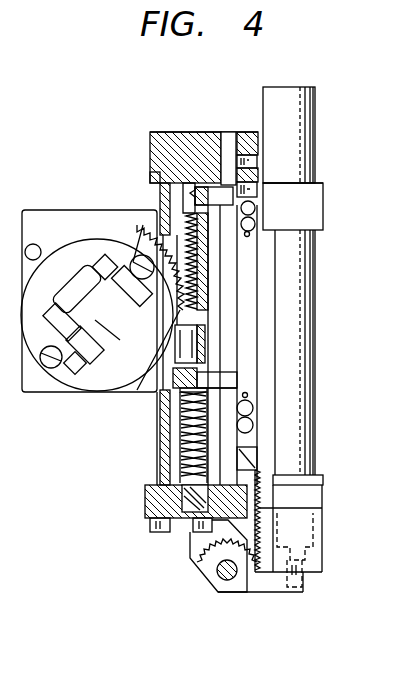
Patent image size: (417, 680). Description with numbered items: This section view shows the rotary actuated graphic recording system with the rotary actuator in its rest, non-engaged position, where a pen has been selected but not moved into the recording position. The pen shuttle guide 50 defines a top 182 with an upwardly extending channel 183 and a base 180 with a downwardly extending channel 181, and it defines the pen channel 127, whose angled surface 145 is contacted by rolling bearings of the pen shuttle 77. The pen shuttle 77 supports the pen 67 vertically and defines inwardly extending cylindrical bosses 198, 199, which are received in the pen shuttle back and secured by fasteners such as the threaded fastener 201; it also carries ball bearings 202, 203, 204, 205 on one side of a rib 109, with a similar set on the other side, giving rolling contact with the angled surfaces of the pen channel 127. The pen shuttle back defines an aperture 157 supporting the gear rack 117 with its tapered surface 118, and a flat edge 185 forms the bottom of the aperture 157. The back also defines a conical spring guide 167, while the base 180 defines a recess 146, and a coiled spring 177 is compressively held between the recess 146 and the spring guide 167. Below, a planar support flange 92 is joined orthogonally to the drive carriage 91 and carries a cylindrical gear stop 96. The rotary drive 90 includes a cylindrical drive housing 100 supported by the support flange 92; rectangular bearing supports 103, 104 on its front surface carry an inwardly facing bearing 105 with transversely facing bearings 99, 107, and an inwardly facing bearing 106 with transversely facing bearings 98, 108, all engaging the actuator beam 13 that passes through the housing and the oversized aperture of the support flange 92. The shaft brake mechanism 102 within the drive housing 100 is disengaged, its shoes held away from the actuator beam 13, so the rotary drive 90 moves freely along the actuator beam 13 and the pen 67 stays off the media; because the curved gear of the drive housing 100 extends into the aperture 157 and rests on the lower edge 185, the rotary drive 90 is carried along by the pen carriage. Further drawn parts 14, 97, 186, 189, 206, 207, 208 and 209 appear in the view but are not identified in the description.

The pen shuttle guide 50 is at (208, 124).
The top 182 is at (183, 133).
The upwardly extending channel 183 is at (150, 175).
The pen channel 127 is at (228, 147).
The angled surface 145 is at (253, 143).
The boss 198 is at (229, 192).
The pen 67 is at (313, 108).
The pen shuttle 77 is at (313, 213).
The ball bearing 202 is at (285, 197).
The ball bearing 203 is at (283, 243).
The rib 109 is at (250, 272).
The gear rack 117 is at (215, 290).
The tapered surface 118 is at (220, 305).
The aperture 157 is at (250, 325).
The ball bearings 186 is at (240, 335).
The shaft 14 is at (215, 350).
The guide rod 97 is at (260, 380).
The boss 199 is at (235, 385).
The ball bearing 204 is at (237, 408).
The ball bearing 205 is at (245, 422).
The inwardly facing bearing 105 is at (115, 245).
The bearing support 103 is at (128, 255).
The transversely facing bearing 107 is at (164, 216).
The support flange 92 is at (32, 210).
The rotary drive 90 is at (88, 400).
The gear stop 96 is at (36, 244).
The transversely facing bearing 99 is at (105, 238).
The actuator beam 13 is at (117, 333).
The shaft brake mechanism 102 is at (73, 260).
The transversely facing bearing 98 is at (53, 313).
The inwardly facing bearing 106 is at (68, 366).
The transversely facing bearing 108 is at (88, 347).
The bearing support 104 is at (76, 372).
The drive housing 100 is at (43, 358).
The flat edge 185 is at (172, 373).
The threaded fastener 201 is at (170, 388).
The drive carriage 91 is at (175, 440).
The spring guide 167 is at (185, 455).
The coiled spring 177 is at (185, 466).
The downwardly extending channel 181 is at (160, 492).
The recess 146 is at (168, 500).
The bracket 207 is at (198, 574).
The pinion 209 is at (228, 582).
The rack 208 is at (258, 536).
The base 180 is at (240, 502).
The base 206 is at (273, 590).
The hidden bracket 189 is at (305, 558).